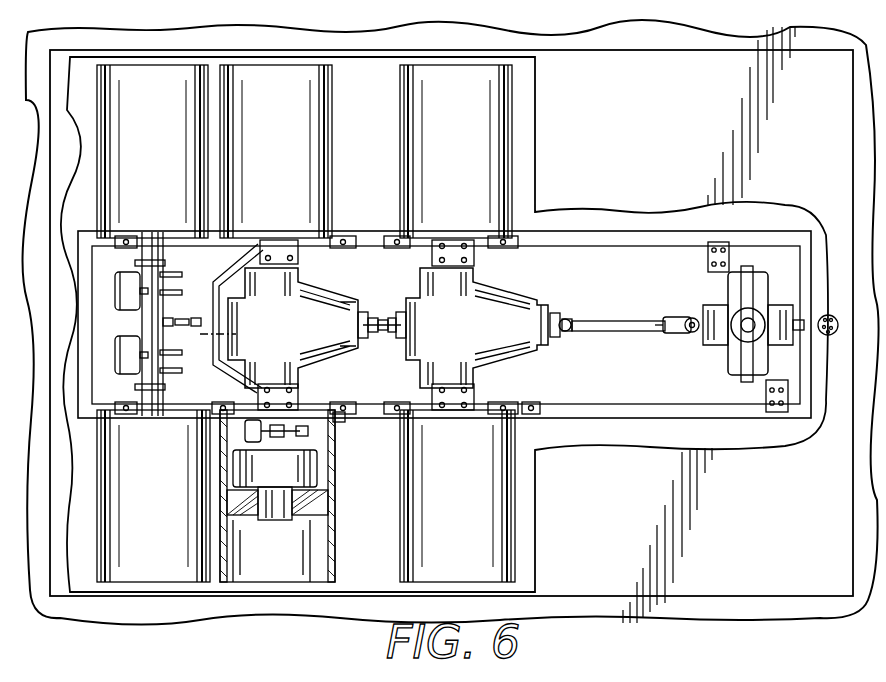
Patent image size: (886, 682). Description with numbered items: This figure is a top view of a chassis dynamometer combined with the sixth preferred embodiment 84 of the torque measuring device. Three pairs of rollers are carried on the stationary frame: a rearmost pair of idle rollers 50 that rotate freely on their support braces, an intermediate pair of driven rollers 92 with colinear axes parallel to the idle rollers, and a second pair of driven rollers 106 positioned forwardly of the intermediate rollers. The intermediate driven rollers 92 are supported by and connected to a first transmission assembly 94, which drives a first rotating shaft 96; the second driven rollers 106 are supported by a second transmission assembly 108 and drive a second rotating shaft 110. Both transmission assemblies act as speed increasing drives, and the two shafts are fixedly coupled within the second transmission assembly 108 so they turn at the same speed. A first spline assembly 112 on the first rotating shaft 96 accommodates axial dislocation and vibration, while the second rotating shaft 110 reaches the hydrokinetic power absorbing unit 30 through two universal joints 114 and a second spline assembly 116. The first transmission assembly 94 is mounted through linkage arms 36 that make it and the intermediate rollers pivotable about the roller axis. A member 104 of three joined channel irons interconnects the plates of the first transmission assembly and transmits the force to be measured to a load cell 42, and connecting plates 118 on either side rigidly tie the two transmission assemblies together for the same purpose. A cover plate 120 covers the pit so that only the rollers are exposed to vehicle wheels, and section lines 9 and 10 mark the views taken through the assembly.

The section line 9- 9 is at (671, 368).
The section line 10- 10 is at (122, 333).
The power absorbing unit 30 is at (758, 288).
The linkage arms 36 is at (230, 402).
The load cell 42 is at (190, 316).
The idle rollers 50 is at (155, 72).
The sixth preferred embodiment 84 is at (626, 21).
The driven rollers 92 is at (272, 72).
The first transmission assembly 94 is at (318, 308).
The first rotating shaft 96 is at (385, 312).
The member 104 is at (205, 270).
The second driven rollers 106 is at (443, 78).
The second transmission assembly 108 is at (505, 302).
The second rotating shaft 110 is at (598, 321).
The first spline assembly 112 is at (386, 340).
The universal joints 114 is at (564, 330).
The second spline assembly 116 is at (682, 334).
The connecting member or plate 118 is at (340, 420).
The cover plate 120 is at (720, 60).